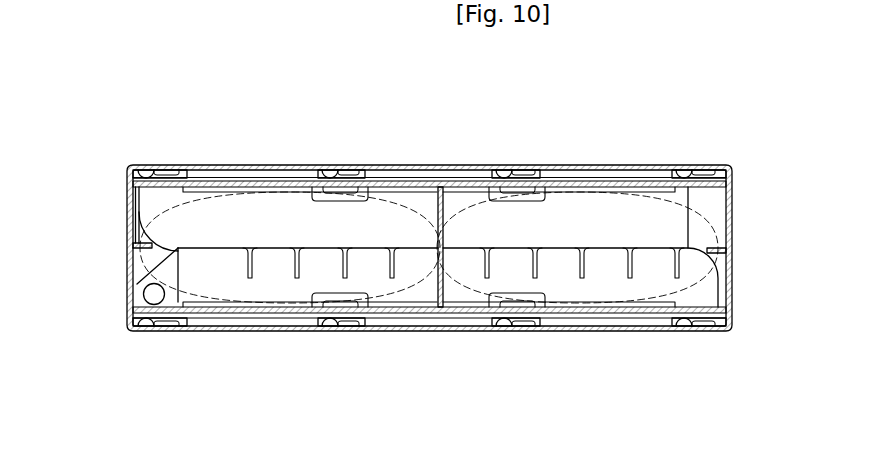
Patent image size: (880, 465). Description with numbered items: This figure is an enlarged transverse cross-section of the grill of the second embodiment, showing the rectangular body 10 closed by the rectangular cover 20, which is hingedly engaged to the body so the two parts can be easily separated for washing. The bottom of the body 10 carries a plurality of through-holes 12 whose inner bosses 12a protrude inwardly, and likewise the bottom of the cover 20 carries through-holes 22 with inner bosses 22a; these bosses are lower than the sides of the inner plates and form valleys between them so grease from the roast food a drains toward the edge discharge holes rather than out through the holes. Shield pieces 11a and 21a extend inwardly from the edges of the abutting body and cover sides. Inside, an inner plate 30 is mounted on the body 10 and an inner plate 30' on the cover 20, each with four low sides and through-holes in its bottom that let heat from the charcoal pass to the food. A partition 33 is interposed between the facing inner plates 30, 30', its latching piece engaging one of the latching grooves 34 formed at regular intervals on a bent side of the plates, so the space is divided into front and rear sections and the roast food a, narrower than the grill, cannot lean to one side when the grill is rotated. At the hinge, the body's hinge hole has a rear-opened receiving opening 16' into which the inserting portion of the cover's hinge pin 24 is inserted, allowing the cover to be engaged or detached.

The body 10 is at (332, 333).
The through-holes 12 is at (597, 323).
The inner bosses 12a is at (663, 323).
The cover 20 is at (517, 167).
The through-holes 22 is at (258, 168).
The inner bosses 22a is at (195, 168).
The shield piece 21a is at (141, 243).
The shield piece 11a is at (719, 249).
The inner plate 30 is at (429, 363).
The inner plate 30' is at (429, 133).
The partition 33 is at (440, 218).
The latching grooves 34 is at (250, 268).
The receiving opening 16' is at (102, 262).
The hinge pin 24 is at (152, 296).
The roast food a is at (411, 283).